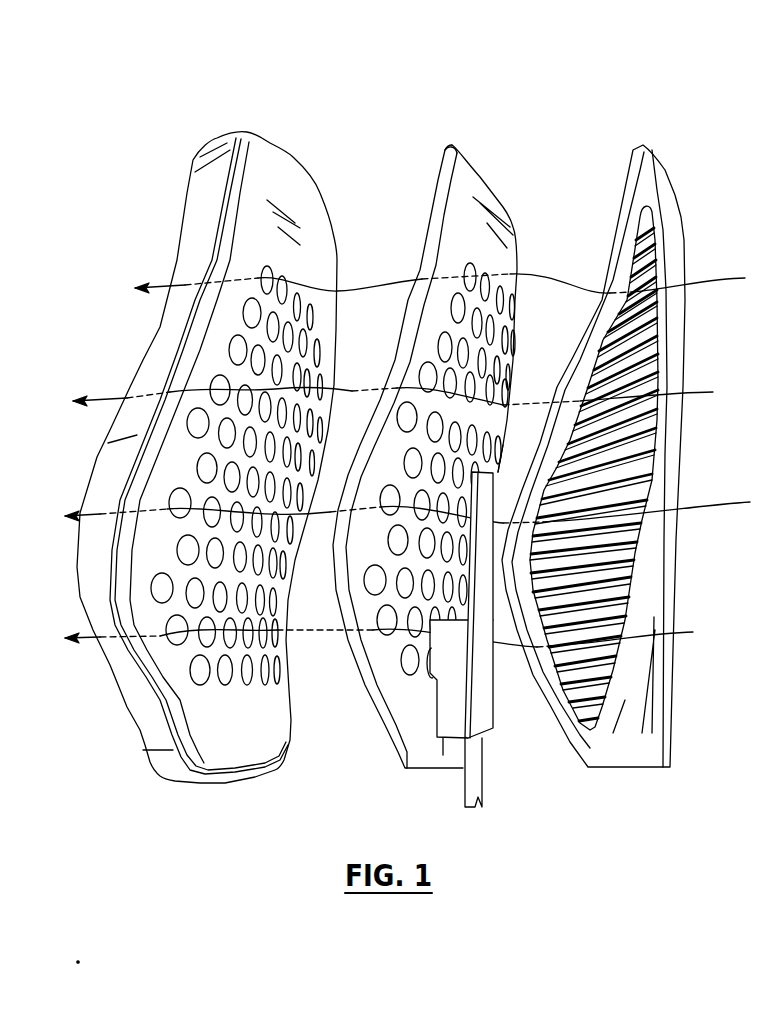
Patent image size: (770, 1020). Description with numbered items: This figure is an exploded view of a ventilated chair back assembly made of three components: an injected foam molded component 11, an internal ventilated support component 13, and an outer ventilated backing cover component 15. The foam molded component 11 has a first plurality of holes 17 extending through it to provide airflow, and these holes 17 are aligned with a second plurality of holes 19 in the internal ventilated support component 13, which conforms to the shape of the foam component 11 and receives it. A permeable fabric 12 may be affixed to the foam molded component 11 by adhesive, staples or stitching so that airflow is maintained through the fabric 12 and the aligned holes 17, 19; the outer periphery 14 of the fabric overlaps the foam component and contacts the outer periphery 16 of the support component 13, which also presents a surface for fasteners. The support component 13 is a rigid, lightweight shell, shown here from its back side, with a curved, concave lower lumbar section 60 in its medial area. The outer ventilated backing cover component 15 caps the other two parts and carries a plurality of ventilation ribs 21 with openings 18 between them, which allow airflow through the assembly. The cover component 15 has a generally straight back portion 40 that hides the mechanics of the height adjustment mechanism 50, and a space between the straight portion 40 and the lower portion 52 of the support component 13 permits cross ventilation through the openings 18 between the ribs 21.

The injected foam molded component 11 is at (290, 180).
The permeable fabric 12 is at (225, 137).
The internal ventilated support component 13 is at (483, 183).
The outer periphery 14 is at (249, 160).
The outer ventilated backing cover component 15 is at (683, 185).
The outer periphery 16 is at (445, 153).
The first plurality of holes 17 is at (287, 287).
The openings 18 is at (627, 577).
The second plurality of holes 19 is at (487, 293).
The ventilation ribs 21 is at (630, 423).
The straight back portion 40 is at (680, 470).
The height adjustment mechanism 50 is at (493, 713).
The lower portion 52 is at (455, 564).
The lower lumbar section 60 is at (447, 487).